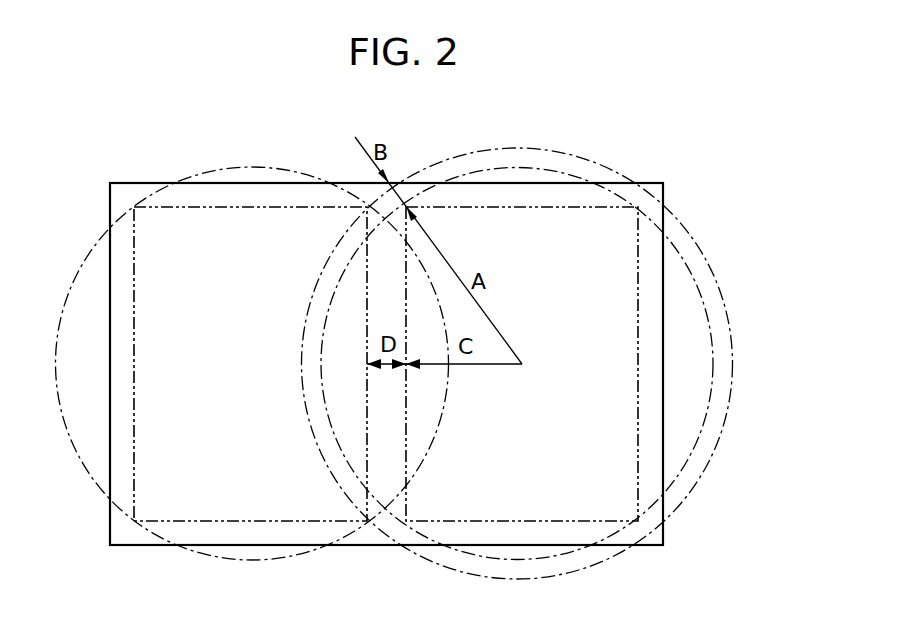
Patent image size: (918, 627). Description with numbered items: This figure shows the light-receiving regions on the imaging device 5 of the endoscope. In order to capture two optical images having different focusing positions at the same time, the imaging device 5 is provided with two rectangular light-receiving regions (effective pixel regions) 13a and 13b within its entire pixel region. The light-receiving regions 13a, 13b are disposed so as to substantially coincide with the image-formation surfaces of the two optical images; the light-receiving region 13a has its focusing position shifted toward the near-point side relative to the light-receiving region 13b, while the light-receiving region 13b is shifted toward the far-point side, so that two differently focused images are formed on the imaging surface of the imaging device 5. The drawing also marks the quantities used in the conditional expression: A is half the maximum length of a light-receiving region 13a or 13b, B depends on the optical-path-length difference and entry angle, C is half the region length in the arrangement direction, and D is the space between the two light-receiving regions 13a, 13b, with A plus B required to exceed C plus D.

The imaging device 5 is at (663, 186).
The light-receiving region 13a is at (252, 207).
The light-receiving region 13b is at (520, 207).